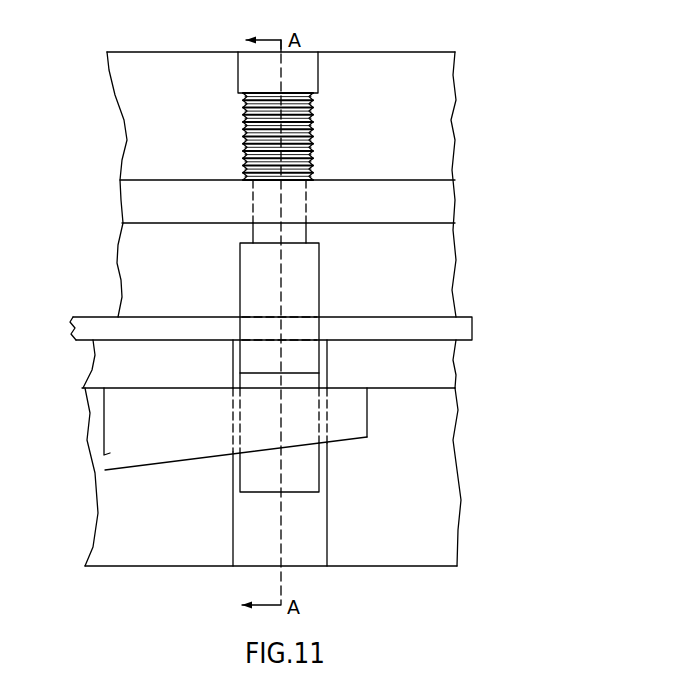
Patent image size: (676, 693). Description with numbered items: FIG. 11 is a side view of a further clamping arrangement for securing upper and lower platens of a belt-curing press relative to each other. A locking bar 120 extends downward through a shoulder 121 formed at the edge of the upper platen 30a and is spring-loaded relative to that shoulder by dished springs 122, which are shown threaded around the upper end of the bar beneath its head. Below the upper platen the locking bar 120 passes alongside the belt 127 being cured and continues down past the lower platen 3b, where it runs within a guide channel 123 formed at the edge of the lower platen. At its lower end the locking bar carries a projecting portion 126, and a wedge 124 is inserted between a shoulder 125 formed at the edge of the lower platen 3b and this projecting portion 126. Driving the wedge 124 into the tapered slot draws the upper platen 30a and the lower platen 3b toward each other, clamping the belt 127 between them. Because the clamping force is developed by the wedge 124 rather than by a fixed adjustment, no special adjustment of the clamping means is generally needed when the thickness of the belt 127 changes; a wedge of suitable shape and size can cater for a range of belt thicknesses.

The upper mold part 30a is at (446, 113).
The shoulder 121 is at (446, 211).
The dished spring 122 is at (307, 138).
The locking bar 120 is at (319, 280).
The belt 127 is at (456, 324).
The shoulder 125 is at (446, 371).
The lower platen 3b is at (440, 438).
The wedge 124 is at (105, 467).
The projecting portion 126 is at (314, 479).
The guide channel 123 is at (330, 542).